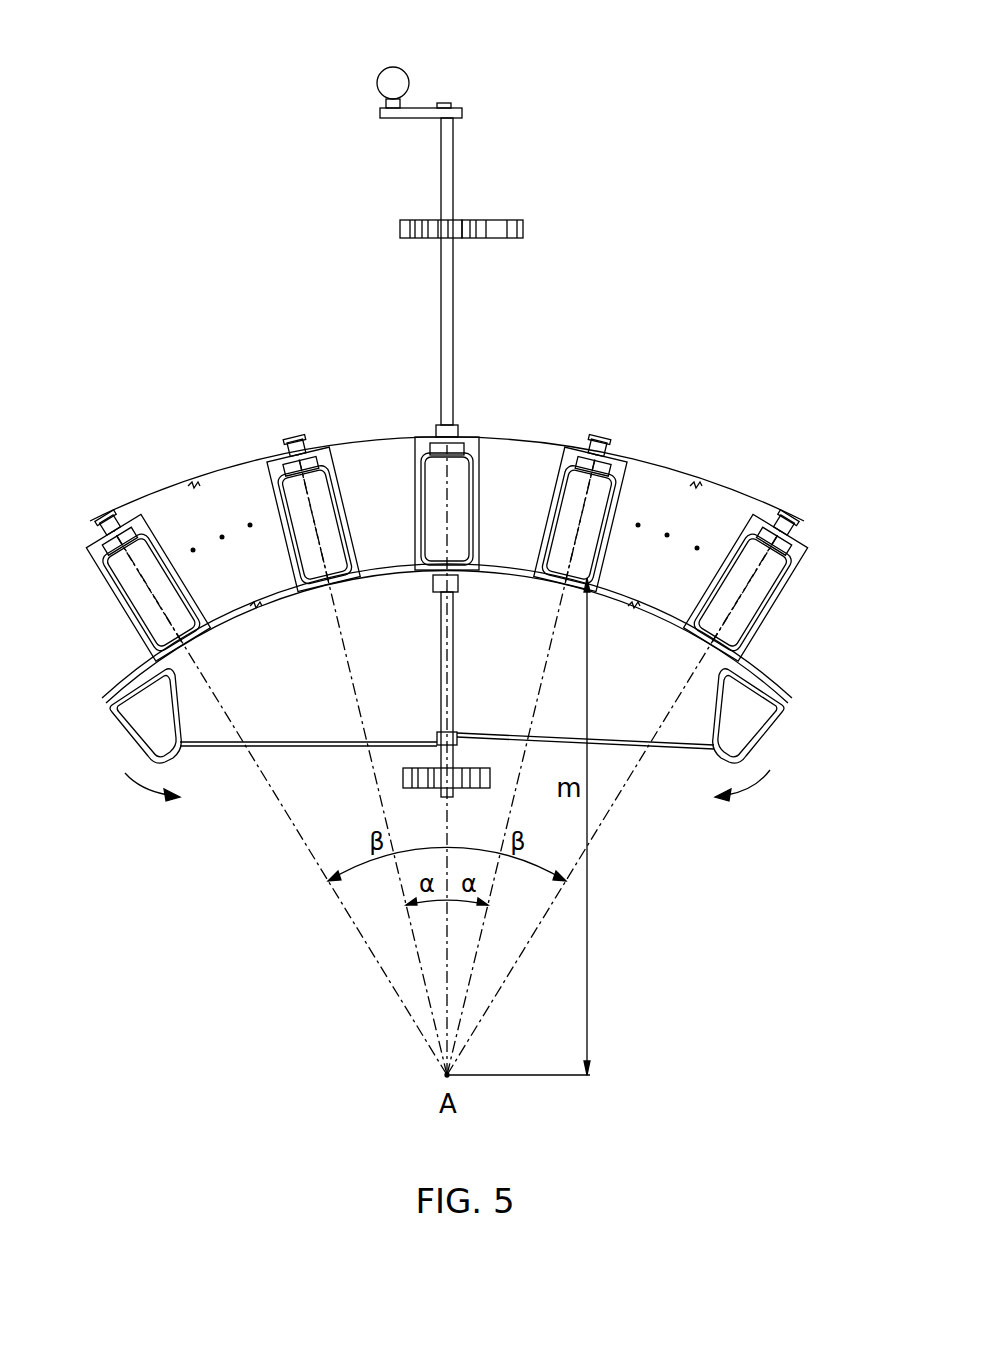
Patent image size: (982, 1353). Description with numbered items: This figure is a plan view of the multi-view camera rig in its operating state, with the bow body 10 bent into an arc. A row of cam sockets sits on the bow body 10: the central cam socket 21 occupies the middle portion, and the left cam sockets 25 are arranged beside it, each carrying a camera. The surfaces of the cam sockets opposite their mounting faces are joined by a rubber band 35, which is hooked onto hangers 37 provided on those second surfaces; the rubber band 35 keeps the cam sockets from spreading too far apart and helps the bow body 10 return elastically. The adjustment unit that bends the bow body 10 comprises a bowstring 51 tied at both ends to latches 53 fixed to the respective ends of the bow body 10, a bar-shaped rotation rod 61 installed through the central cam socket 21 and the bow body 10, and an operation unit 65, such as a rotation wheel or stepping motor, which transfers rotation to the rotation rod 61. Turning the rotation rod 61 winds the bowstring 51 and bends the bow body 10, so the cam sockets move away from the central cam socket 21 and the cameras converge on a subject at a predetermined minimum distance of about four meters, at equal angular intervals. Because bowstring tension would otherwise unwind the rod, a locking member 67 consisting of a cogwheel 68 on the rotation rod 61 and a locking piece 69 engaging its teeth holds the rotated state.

The bow body 10 is at (780, 678).
The central cam socket 21 is at (480, 467).
The left cam sockets 25 is at (117, 527).
The rubber band 35 is at (387, 437).
The hangers 37 is at (456, 432).
The bowstring 51 is at (618, 746).
The latches 53 is at (778, 723).
The rotation rod 61 is at (453, 318).
The operation unit 65 is at (410, 108).
The locking member 67 is at (472, 163).
The cogwheel 68 is at (456, 220).
The locking piece 69 is at (514, 220).